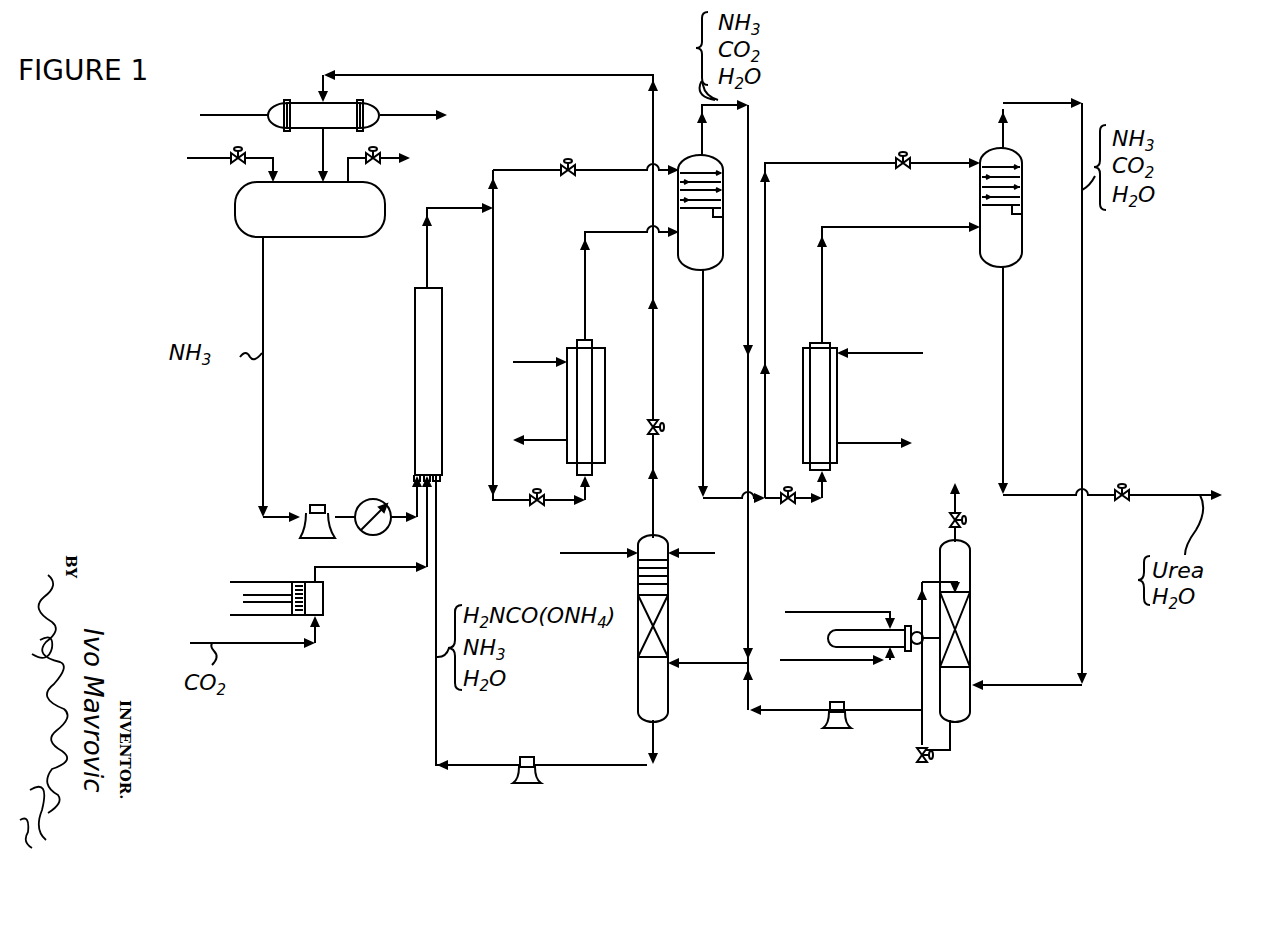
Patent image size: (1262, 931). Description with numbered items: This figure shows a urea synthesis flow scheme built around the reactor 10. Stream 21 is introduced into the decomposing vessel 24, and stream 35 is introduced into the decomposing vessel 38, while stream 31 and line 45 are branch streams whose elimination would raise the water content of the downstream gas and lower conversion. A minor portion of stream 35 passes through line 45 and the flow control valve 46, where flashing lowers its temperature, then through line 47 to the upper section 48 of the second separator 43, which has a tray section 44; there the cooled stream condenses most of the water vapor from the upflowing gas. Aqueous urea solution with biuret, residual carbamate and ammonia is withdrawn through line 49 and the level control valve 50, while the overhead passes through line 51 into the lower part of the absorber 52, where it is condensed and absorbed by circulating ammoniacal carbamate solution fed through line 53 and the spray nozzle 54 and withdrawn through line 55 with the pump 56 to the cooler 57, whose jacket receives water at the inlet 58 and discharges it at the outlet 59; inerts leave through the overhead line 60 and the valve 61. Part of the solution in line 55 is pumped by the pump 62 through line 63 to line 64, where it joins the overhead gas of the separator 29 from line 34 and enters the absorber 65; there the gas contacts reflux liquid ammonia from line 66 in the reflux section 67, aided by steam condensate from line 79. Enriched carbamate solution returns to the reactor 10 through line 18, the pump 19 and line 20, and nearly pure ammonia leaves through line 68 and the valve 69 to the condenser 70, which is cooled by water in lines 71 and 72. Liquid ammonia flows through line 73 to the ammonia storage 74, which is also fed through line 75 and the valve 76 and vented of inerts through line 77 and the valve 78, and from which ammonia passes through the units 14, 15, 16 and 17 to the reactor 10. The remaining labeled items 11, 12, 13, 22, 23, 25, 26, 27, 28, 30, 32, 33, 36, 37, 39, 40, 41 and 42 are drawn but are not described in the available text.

The reactor 10 is at (414, 352).
The carbon dioxide feed line 11 is at (278, 648).
The carbon dioxide compressor 12 is at (326, 599).
The compressed carbon dioxide line 13 is at (397, 569).
The unit 14 is at (273, 518).
The unit 15 is at (310, 503).
The unit 16 is at (337, 512).
The unit 17 is at (364, 500).
The line 18 is at (651, 738).
The pump 19 is at (527, 756).
The line 20 is at (480, 762).
The stream 21 is at (430, 248).
The effluent line to heat exchanger 22 is at (495, 305).
The pressure reducing valve 23 is at (535, 508).
The decomposing vessel 24 is at (592, 341).
The heat exchanger tube 25 is at (575, 398).
The heating medium inlet 26 is at (527, 360).
The heating medium outlet 27 is at (542, 443).
The heated effluent line 28 is at (627, 248).
The separator 29 is at (683, 277).
The first separator 30 is at (708, 176).
The stream 31 is at (600, 168).
The bypass valve 32 is at (568, 178).
The separator overhead line 33 is at (692, 165).
The line 34 is at (752, 140).
The stream 35 is at (730, 495).
The pressure reducing valve 36 is at (793, 505).
The line to second heat exchanger 37 is at (823, 485).
The decomposing vessel 38 is at (826, 342).
The second heat exchanger shell 39 is at (808, 345).
The heating medium inlet 40 is at (887, 350).
The heating medium outlet 41 is at (878, 441).
The line to second separator 42 is at (825, 283).
The second separator 43 is at (1024, 236).
The tray section 44 is at (1005, 187).
The line 45 is at (817, 178).
The flow control valve 46 is at (900, 152).
The line 47 is at (925, 160).
The upper section 48 is at (993, 160).
The line 49 is at (1040, 492).
The level control valve 50 is at (1125, 503).
The line 51 is at (1007, 128).
The absorber 52 is at (972, 561).
The line 53 is at (935, 580).
The spray nozzle 54 is at (960, 585).
The line 55 is at (918, 668).
The pump 56 is at (930, 763).
The cooler 57 is at (834, 637).
The inlet 58 is at (798, 663).
The outlet 59 is at (829, 611).
The overhead line 60 is at (950, 505).
The valve 61 is at (966, 522).
The pump 62 is at (835, 732).
The line 63 is at (777, 715).
The line 64 is at (713, 667).
The absorber 65 is at (670, 622).
The line 66 is at (600, 555).
The reflux section 67 is at (670, 562).
The line 68 is at (346, 72).
The valve 69 is at (660, 420).
The condenser 70 is at (312, 101).
The line 71 is at (245, 112).
The line 72 is at (403, 113).
The line 73 is at (320, 152).
The ammonia storage 74 is at (293, 223).
The line 75 is at (212, 160).
The valve 76 is at (232, 150).
The line 77 is at (349, 175).
The valve 78 is at (382, 150).
The line 79 is at (690, 550).